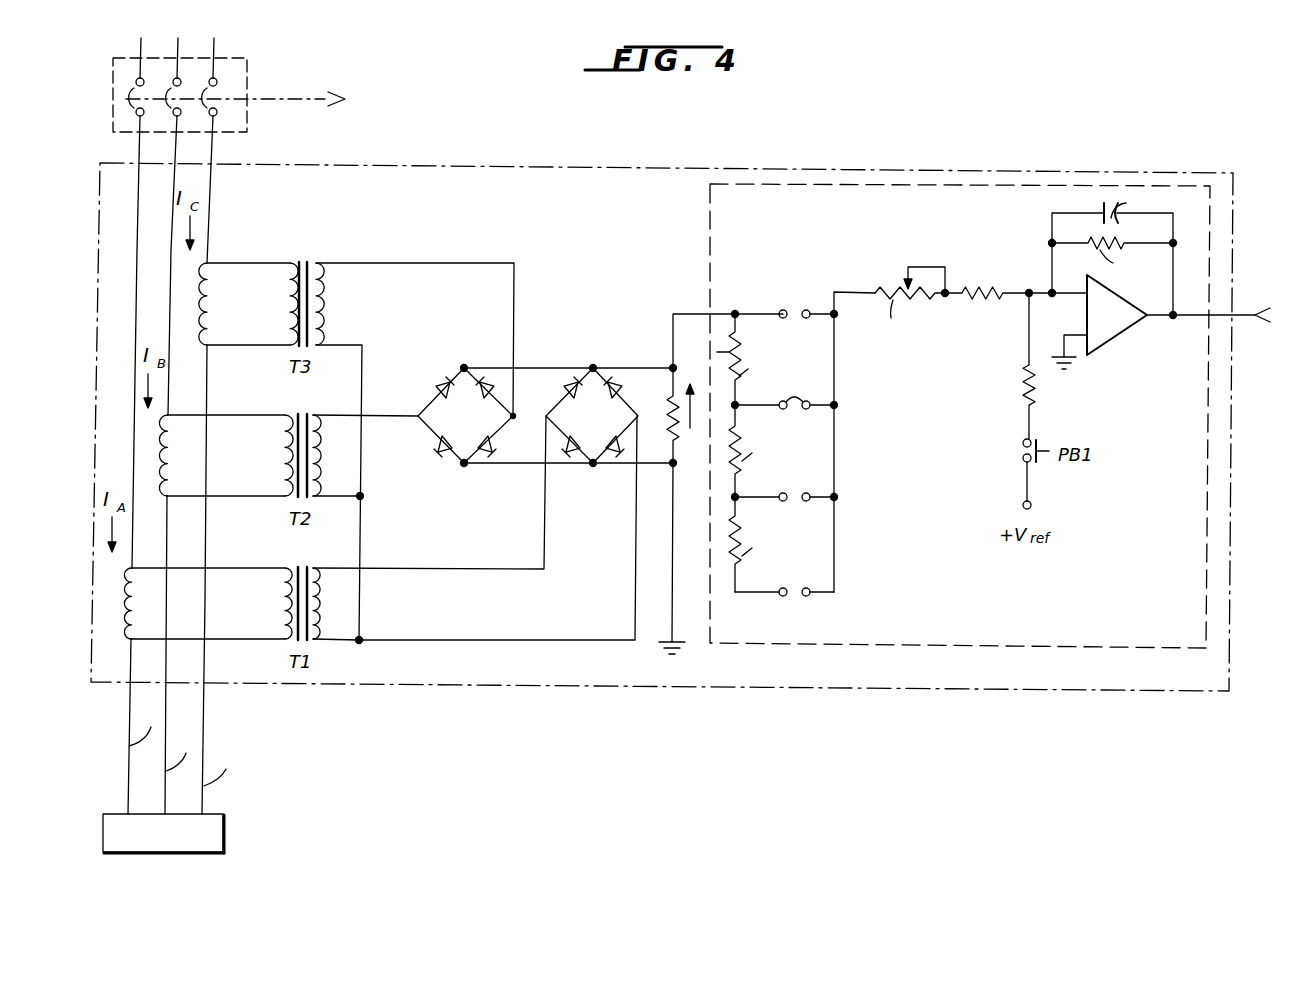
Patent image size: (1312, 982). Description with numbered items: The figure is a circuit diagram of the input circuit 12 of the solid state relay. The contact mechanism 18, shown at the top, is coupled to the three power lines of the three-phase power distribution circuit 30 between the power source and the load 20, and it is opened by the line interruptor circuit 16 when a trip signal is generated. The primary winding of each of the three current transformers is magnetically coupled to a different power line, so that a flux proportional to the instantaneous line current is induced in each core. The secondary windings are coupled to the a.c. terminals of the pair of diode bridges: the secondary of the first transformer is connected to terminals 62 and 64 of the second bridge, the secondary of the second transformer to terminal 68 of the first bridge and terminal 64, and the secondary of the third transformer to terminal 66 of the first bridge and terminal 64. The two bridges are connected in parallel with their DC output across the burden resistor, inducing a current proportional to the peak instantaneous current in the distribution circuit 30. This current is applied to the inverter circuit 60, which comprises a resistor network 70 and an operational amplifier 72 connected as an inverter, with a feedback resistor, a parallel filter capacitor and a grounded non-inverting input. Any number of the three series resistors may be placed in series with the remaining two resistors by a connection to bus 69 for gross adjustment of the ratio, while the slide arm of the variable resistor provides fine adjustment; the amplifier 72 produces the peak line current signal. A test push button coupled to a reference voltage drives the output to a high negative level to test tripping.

The input circuit 12 is at (766, 689).
The line interruptor circuit 16 is at (447, 111).
The contact mechanism 18 is at (240, 58).
The load 20 is at (226, 838).
The power distribution circuit 30 is at (212, 695).
The inverter circuit 60 is at (998, 630).
The terminal of diode bridge DB2 62 is at (546, 415).
The terminal of diode bridge DB2 64 is at (640, 415).
The terminal of diode bridge DB1 66 is at (513, 419).
The terminal of diode bridge DB1 68 is at (418, 415).
The bus 69 is at (838, 560).
The resistor network 70 is at (889, 354).
The operational amplifier 72 is at (1120, 341).